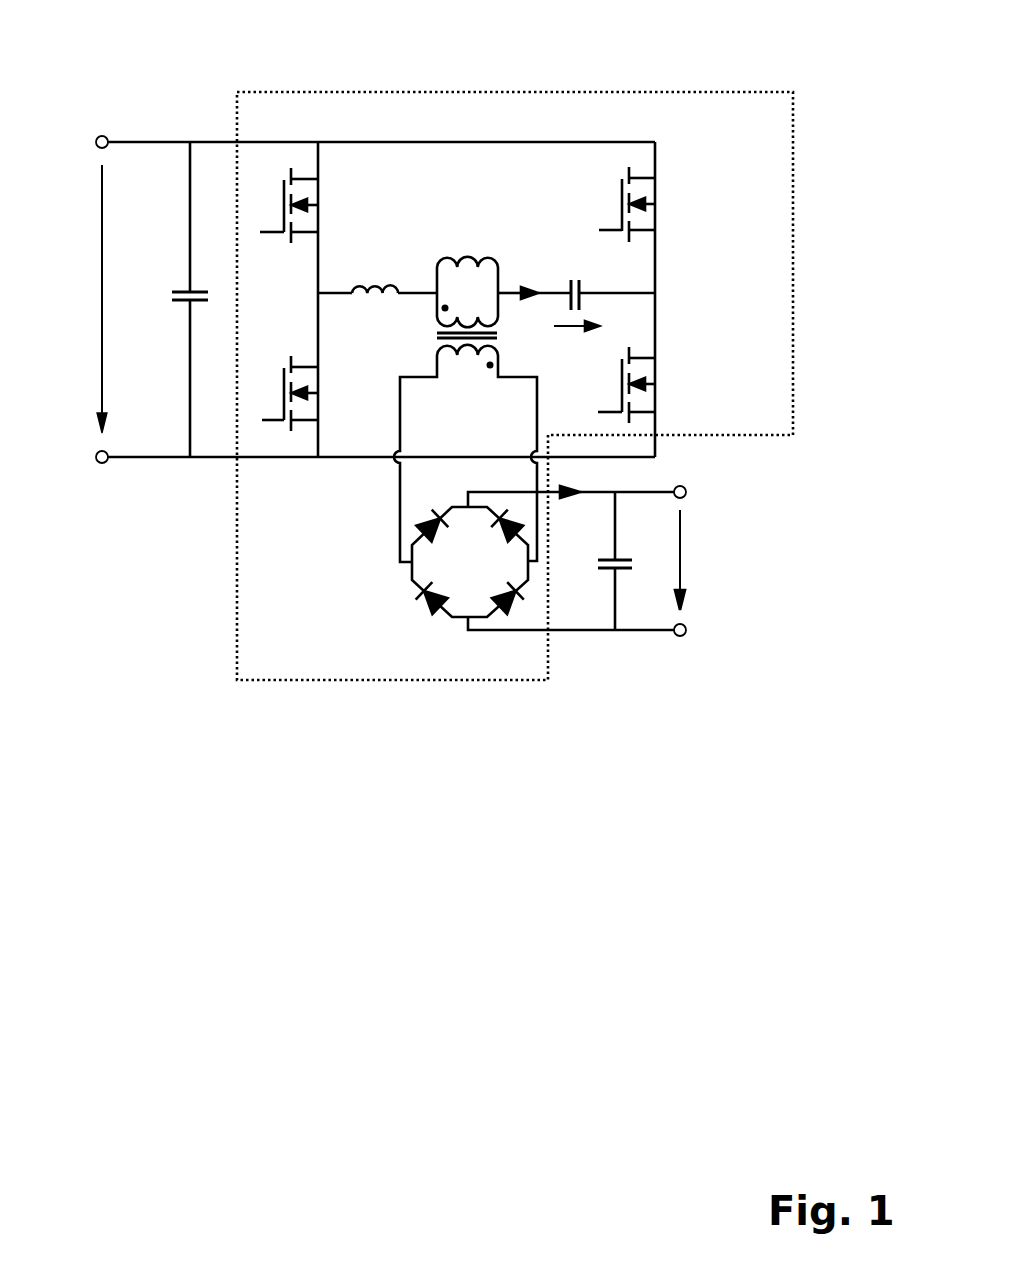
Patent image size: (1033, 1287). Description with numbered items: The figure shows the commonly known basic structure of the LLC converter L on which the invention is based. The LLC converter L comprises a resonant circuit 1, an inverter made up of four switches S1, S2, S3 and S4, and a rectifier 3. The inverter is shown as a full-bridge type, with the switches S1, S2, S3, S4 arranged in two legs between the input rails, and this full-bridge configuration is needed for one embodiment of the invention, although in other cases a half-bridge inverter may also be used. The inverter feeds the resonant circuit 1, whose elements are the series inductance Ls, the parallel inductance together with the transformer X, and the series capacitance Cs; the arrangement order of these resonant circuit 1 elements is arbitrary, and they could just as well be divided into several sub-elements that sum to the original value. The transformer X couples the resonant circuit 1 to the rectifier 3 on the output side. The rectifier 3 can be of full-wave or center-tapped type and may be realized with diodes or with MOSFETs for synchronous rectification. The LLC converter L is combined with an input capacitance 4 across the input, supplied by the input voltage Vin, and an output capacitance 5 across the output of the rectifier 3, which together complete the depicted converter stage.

The resonant circuit 1 is at (462, 192).
The rectifier 3 is at (425, 648).
The input capacitance 4 is at (180, 307).
The output capacitance 5 is at (625, 577).
The LLC converter L is at (255, 690).
The switch S1 is at (322, 212).
The switch S2 is at (298, 437).
The switch S3 is at (662, 212).
The switch S4 is at (660, 400).
The series inductance Ls is at (377, 273).
The transformer X is at (465, 394).
The series capacitance Cs is at (576, 305).
The input voltage Vin is at (78, 299).